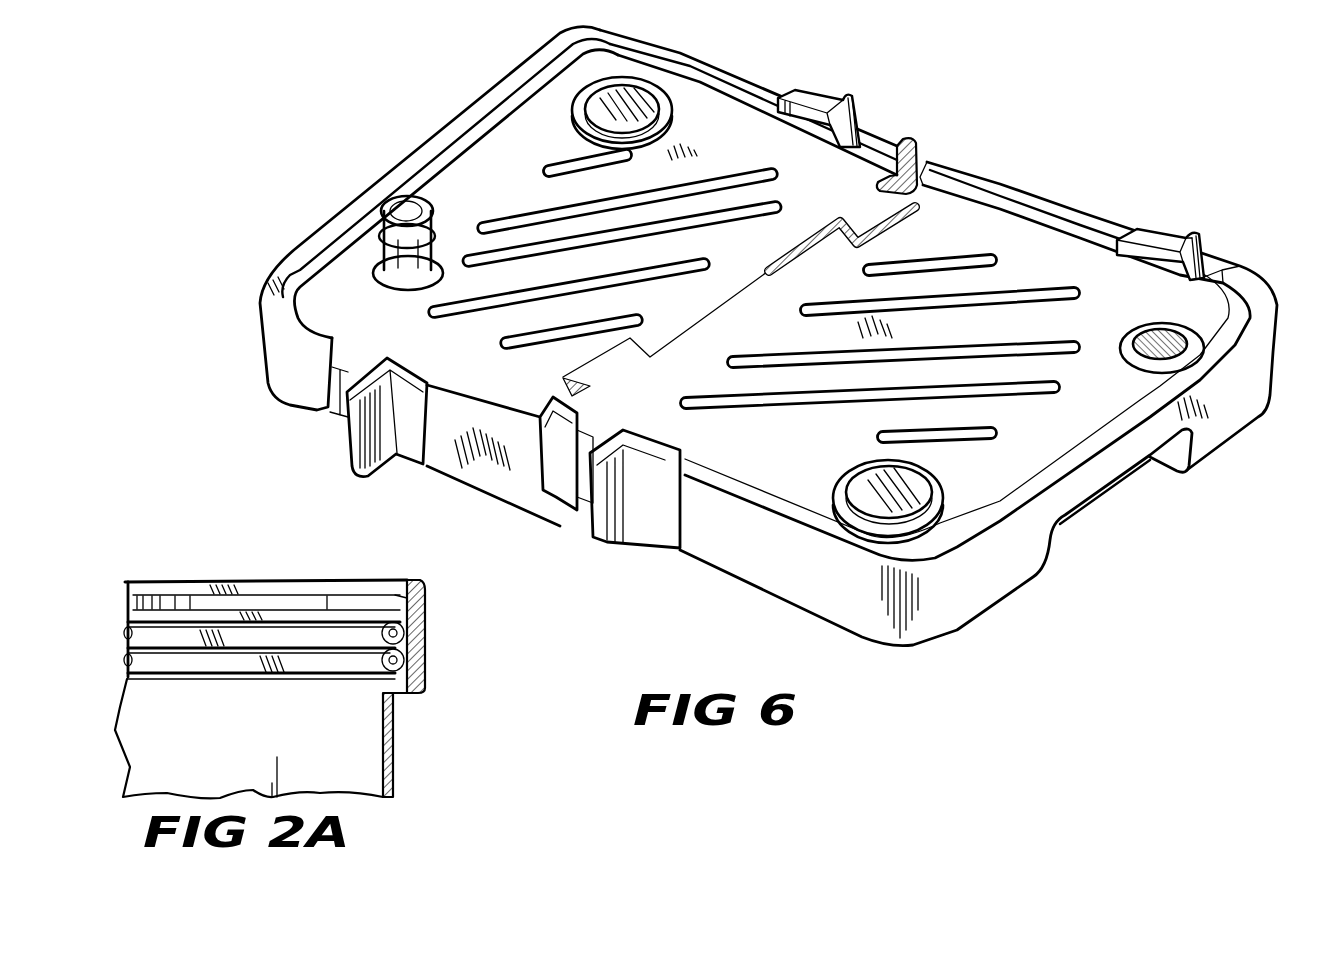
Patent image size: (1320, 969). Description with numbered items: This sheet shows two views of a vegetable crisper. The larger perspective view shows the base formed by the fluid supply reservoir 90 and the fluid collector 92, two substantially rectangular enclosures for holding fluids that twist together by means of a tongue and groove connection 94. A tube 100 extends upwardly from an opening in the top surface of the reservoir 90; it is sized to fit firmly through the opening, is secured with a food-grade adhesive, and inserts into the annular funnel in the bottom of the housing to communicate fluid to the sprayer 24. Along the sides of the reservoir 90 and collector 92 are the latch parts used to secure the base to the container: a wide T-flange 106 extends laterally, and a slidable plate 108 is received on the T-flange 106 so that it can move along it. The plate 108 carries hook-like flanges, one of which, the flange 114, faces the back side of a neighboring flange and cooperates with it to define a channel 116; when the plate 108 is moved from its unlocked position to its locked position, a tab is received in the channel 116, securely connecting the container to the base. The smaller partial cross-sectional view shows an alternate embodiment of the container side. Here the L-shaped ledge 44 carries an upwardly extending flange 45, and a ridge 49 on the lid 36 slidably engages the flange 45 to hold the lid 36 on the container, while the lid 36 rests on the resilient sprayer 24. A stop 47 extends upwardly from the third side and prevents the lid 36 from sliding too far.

In FIG. 6, the tongue and groove connection 94 is at (927, 150).
In FIG. 6, the slidable plate 108 is at (1148, 228).
In FIG. 6, the flange 114 is at (1207, 265).
In FIG. 6, the channel 116 is at (1205, 272).
In FIG. 6, the tube 100 is at (378, 268).
In FIG. 6, the reservoir 90 is at (495, 368).
In FIG. 6, the T-flange 106 is at (587, 517).
In FIG. 6, the collector 92 is at (757, 455).
In FIG. 2A, the lid 36 is at (193, 605).
In FIG. 2A, the stop 47 is at (293, 587).
In FIG. 2A, the flange 45 is at (415, 580).
In FIG. 2A, the ridge 49 is at (410, 600).
In FIG. 2A, the sprayer 24 is at (143, 663).
In FIG. 2A, the ledge 44 is at (425, 676).